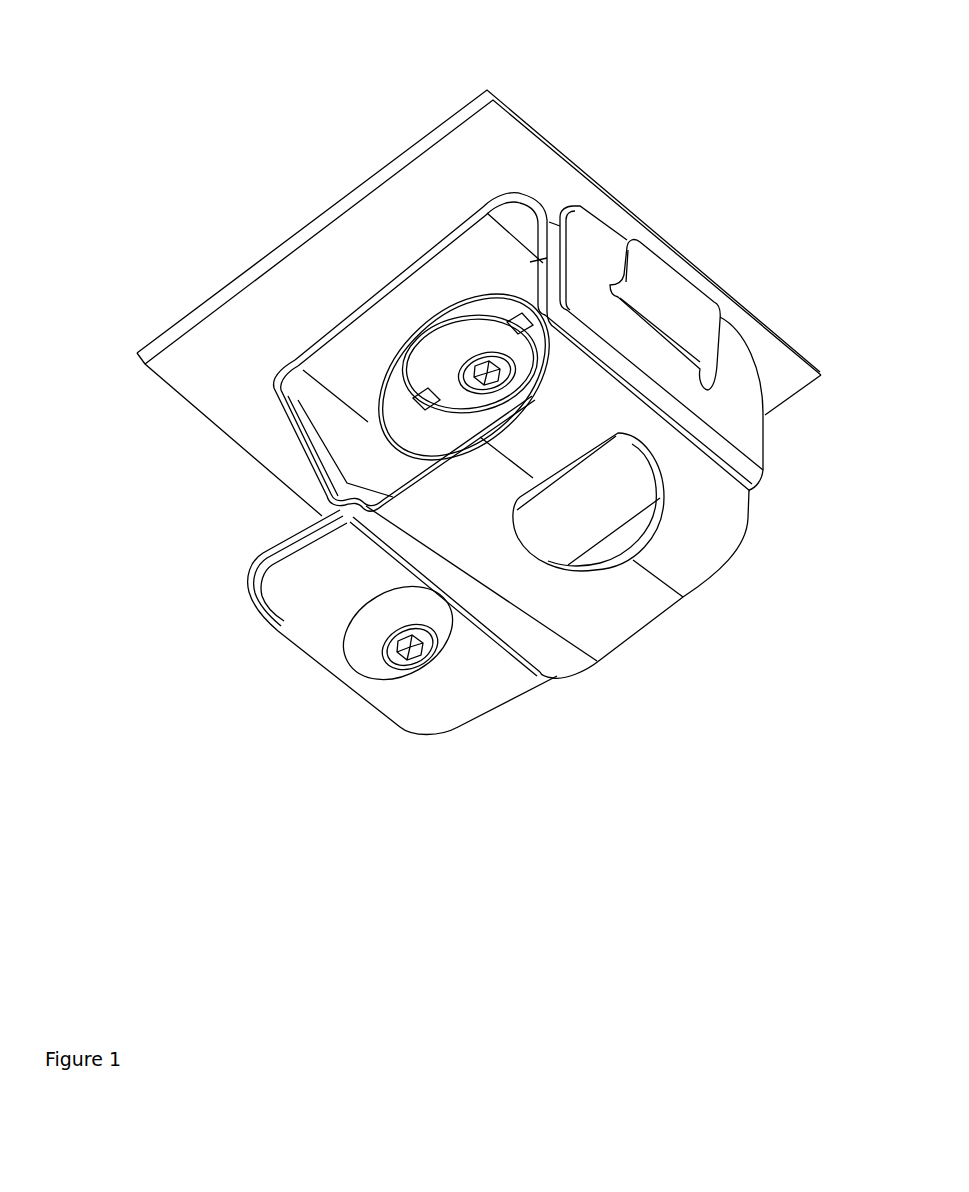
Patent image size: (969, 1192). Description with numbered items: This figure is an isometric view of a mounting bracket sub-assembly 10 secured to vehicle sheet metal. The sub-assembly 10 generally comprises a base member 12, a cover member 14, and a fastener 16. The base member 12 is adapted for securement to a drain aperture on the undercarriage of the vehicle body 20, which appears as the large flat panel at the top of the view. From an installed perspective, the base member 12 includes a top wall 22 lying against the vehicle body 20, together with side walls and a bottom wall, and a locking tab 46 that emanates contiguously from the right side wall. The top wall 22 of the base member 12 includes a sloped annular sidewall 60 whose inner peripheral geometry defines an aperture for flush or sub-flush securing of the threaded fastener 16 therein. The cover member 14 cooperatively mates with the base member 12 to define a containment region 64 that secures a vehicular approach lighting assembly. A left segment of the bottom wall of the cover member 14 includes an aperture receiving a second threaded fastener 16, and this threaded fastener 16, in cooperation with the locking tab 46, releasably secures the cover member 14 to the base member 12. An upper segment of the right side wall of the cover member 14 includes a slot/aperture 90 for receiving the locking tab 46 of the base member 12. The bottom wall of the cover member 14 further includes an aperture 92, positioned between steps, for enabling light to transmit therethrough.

The mounting bracket sub-assembly 10 is at (752, 722).
The base member 12 is at (260, 555).
The cover member 14 is at (282, 598).
The fastener 16 is at (457, 348).
The vehicle body 20 is at (330, 218).
The top wall 22 is at (403, 270).
The locking tab 46 is at (672, 278).
The sloped annular sidewall 60 is at (403, 403).
The containment region 64 is at (323, 392).
The slot/aperture 90 is at (693, 372).
The aperture 92 is at (600, 513).